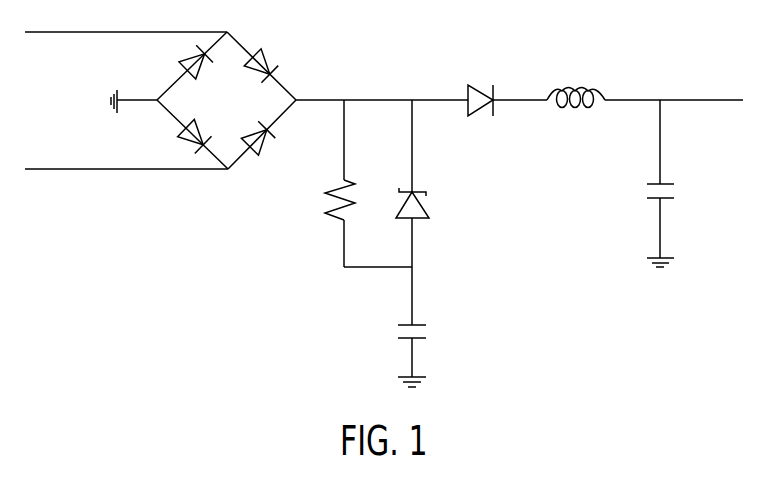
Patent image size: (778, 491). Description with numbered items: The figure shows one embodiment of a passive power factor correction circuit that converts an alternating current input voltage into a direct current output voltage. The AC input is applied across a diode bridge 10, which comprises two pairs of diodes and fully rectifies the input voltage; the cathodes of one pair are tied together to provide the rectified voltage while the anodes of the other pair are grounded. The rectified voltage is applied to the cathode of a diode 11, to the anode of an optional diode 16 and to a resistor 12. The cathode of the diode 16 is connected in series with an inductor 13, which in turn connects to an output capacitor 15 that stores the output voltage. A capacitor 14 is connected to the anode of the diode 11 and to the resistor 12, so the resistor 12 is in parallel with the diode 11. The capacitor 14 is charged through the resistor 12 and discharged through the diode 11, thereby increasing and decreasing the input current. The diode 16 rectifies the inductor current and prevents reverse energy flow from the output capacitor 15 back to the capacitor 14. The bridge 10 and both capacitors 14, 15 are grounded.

The diode bridge 10 is at (199, 206).
The diode 11 is at (423, 209).
The resistor 12 is at (330, 212).
The inductor 13 is at (567, 87).
The capacitor 14 is at (420, 339).
The output capacitor 15 is at (668, 198).
The optional diode 16 is at (477, 88).